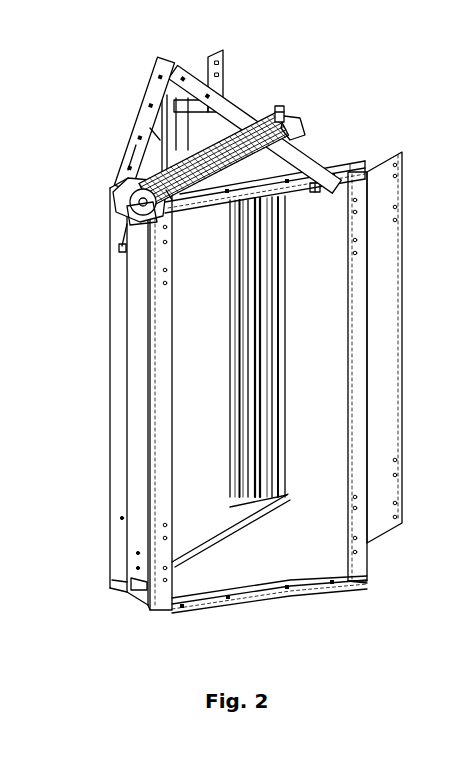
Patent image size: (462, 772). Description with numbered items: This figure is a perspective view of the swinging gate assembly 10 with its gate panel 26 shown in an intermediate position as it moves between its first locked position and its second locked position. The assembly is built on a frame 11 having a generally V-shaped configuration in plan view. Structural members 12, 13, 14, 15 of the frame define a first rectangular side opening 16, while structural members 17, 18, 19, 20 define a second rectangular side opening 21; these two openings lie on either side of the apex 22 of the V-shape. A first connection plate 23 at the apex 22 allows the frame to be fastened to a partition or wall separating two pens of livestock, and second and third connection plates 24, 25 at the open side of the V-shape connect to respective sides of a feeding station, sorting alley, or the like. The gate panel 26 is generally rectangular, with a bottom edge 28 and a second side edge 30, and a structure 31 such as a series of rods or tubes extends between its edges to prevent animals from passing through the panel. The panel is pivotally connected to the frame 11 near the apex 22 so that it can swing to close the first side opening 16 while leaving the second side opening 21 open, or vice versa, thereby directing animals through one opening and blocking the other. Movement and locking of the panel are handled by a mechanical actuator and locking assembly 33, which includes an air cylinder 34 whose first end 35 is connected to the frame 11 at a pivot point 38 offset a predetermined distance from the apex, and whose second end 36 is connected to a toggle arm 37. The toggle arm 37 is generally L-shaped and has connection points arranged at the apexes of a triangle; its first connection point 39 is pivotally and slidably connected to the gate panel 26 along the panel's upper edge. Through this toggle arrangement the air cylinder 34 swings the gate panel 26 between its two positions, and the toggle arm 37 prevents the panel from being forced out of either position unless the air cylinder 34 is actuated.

The swinging gate assembly 10 is at (85, 229).
The frame 11 is at (143, 122).
The structural member 12 is at (330, 170).
The structural member 13 is at (356, 402).
The structural member 14 is at (320, 587).
The structural member 15 is at (163, 470).
The first rectangular side opening 16 is at (320, 537).
The structural member 17 is at (128, 152).
The structural member 18 is at (209, 62).
The structural member 19 is at (125, 593).
The structural member 20 is at (118, 455).
The second rectangular side opening 21 is at (148, 128).
The apex 22 is at (137, 372).
The first connection plate 23 is at (133, 547).
The second connection plate 24 is at (388, 275).
The third connection plate 25 is at (232, 120).
The gate panel 26 is at (273, 313).
The bottom edge 28 is at (220, 532).
The second side edge 30 is at (282, 277).
The structure 31 is at (245, 264).
The mechanical actuator and locking assembly 33 is at (290, 114).
The air cylinder 34 is at (195, 200).
The first end 35 is at (143, 203).
The second end 36 is at (300, 135).
The toggle arm 37 is at (262, 125).
The pivot point 38 is at (118, 190).
The first connection point 39 is at (153, 127).